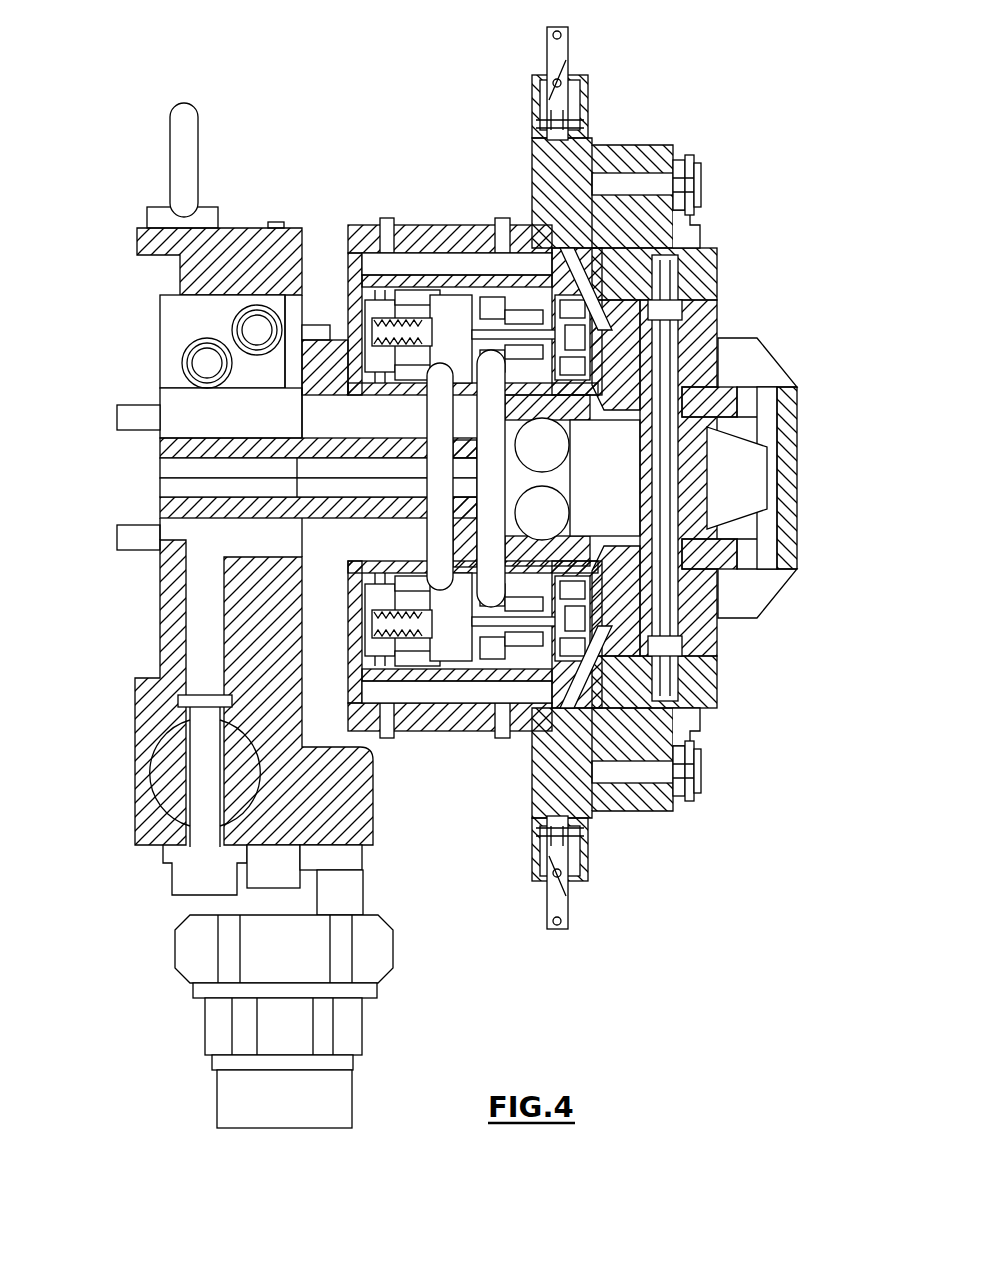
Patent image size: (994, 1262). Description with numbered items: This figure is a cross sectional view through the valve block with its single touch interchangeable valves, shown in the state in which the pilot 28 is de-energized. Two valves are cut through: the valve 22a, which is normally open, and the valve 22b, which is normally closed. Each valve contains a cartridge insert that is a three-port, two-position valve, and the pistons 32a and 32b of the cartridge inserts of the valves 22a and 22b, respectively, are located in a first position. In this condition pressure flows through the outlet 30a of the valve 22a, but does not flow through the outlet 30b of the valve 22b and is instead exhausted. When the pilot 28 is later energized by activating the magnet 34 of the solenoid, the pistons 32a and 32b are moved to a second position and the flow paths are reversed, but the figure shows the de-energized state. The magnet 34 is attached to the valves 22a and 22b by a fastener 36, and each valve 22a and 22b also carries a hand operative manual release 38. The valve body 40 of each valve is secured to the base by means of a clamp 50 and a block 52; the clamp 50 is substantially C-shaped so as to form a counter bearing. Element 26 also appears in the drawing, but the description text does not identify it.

The valve 22a is at (612, 128).
The valve 22b is at (716, 723).
The manifold block 26 is at (175, 262).
The pilot 28 is at (555, 214).
The outlet 30a is at (160, 468).
The outlet 30b is at (160, 487).
The piston 32a is at (450, 325).
The piston 32b is at (437, 617).
The magnet 34 is at (635, 157).
The fastener 36 is at (701, 180).
The hand operative manual release 38 is at (547, 47).
The valve body 40 is at (455, 245).
The clamp 50 is at (752, 350).
The block 52 is at (325, 335).